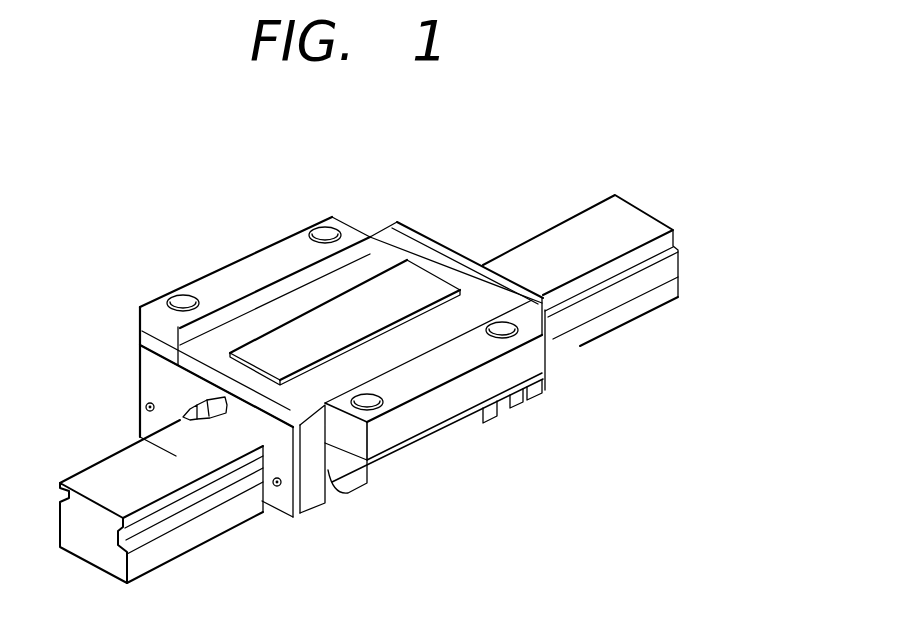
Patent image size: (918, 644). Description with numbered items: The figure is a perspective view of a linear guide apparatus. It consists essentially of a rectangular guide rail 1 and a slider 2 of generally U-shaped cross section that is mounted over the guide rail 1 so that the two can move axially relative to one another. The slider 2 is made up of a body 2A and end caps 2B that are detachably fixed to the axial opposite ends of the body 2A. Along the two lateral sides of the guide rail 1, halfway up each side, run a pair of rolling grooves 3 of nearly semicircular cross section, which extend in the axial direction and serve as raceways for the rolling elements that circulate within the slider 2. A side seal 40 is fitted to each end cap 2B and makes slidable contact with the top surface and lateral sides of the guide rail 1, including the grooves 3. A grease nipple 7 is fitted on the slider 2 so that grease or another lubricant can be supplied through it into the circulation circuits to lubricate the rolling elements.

The guide rail 1 is at (552, 262).
The slider 2 is at (303, 315).
The body 2A is at (273, 255).
The end caps 2B is at (175, 343).
The second pair of rolling grooves 3 is at (190, 493).
The grease nipple 7 is at (178, 410).
The side seal 40 is at (437, 240).